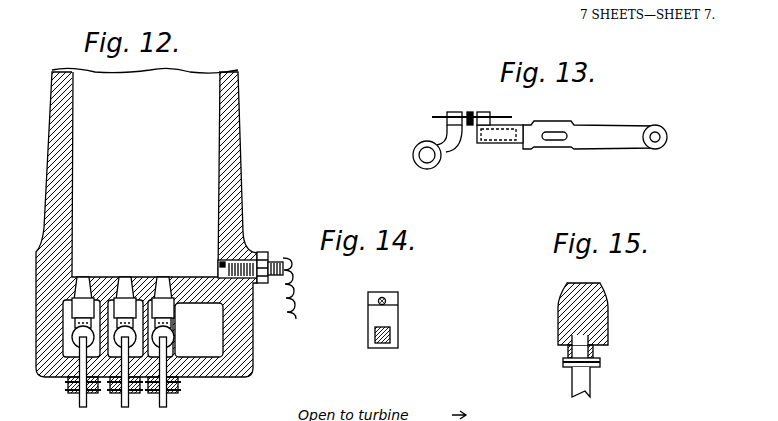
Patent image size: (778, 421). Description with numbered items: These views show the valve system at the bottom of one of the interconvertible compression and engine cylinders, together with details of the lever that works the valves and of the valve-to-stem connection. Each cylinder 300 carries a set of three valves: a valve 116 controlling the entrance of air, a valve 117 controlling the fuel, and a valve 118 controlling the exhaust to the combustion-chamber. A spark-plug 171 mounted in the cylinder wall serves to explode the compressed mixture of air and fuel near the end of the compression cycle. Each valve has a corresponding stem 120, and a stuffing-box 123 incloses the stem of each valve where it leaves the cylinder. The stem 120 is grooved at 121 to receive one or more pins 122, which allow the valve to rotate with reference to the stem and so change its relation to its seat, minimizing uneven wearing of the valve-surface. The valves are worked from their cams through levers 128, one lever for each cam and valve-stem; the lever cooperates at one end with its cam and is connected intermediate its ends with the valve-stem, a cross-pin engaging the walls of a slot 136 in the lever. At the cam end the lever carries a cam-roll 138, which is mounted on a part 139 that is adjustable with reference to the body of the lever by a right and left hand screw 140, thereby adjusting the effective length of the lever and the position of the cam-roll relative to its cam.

In FIG. 12, the cylinder 300 is at (73, 148).
In FIG. 12, the air valve 116 is at (84, 305).
In FIG. 12, the fuel valve 117 is at (125, 305).
In FIG. 12, the exhaust valve 118 is at (163, 305).
In FIG. 12, the spark-plug 171 is at (259, 258).
In FIG. 12, the valve stem 120 is at (80, 400).
In FIG. 15, the valve stem 120 is at (576, 383).
In FIG. 12, the stuffing-box 123 is at (145, 394).
In FIG. 13, the right and left hand screw 140 is at (470, 112).
In FIG. 14, the right and left hand screw 140 is at (386, 300).
In FIG. 13, the adjustable part 139 is at (430, 152).
In FIG. 14, the adjustable part 139 is at (391, 318).
In FIG. 13, the cam-roll 138 is at (443, 163).
In FIG. 13, the slot 136 is at (557, 138).
In FIG. 13, the lever 128 is at (657, 98).
In FIG. 14, the lever 128 is at (392, 341).
In FIG. 15, the pin 122 is at (600, 362).
In FIG. 15, the groove 121 is at (593, 369).